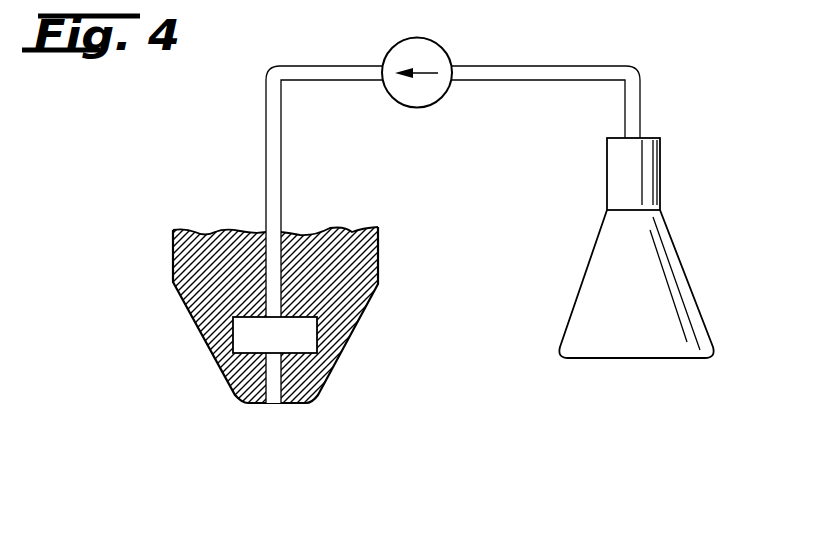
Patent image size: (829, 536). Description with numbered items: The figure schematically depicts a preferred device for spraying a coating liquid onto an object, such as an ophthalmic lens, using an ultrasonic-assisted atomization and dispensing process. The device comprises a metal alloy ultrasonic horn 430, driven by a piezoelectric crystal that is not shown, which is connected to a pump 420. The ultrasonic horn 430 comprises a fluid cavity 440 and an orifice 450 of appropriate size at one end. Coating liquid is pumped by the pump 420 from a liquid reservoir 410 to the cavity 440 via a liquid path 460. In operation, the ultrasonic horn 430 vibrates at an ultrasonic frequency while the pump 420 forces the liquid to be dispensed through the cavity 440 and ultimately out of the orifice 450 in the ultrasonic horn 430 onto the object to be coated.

The liquid reservoir 410 is at (597, 285).
The pump 420 is at (427, 95).
The ultrasonic horn 430 is at (354, 293).
The fluid cavity 440 is at (277, 282).
The orifice 450 is at (277, 408).
The liquid path 460 is at (273, 152).